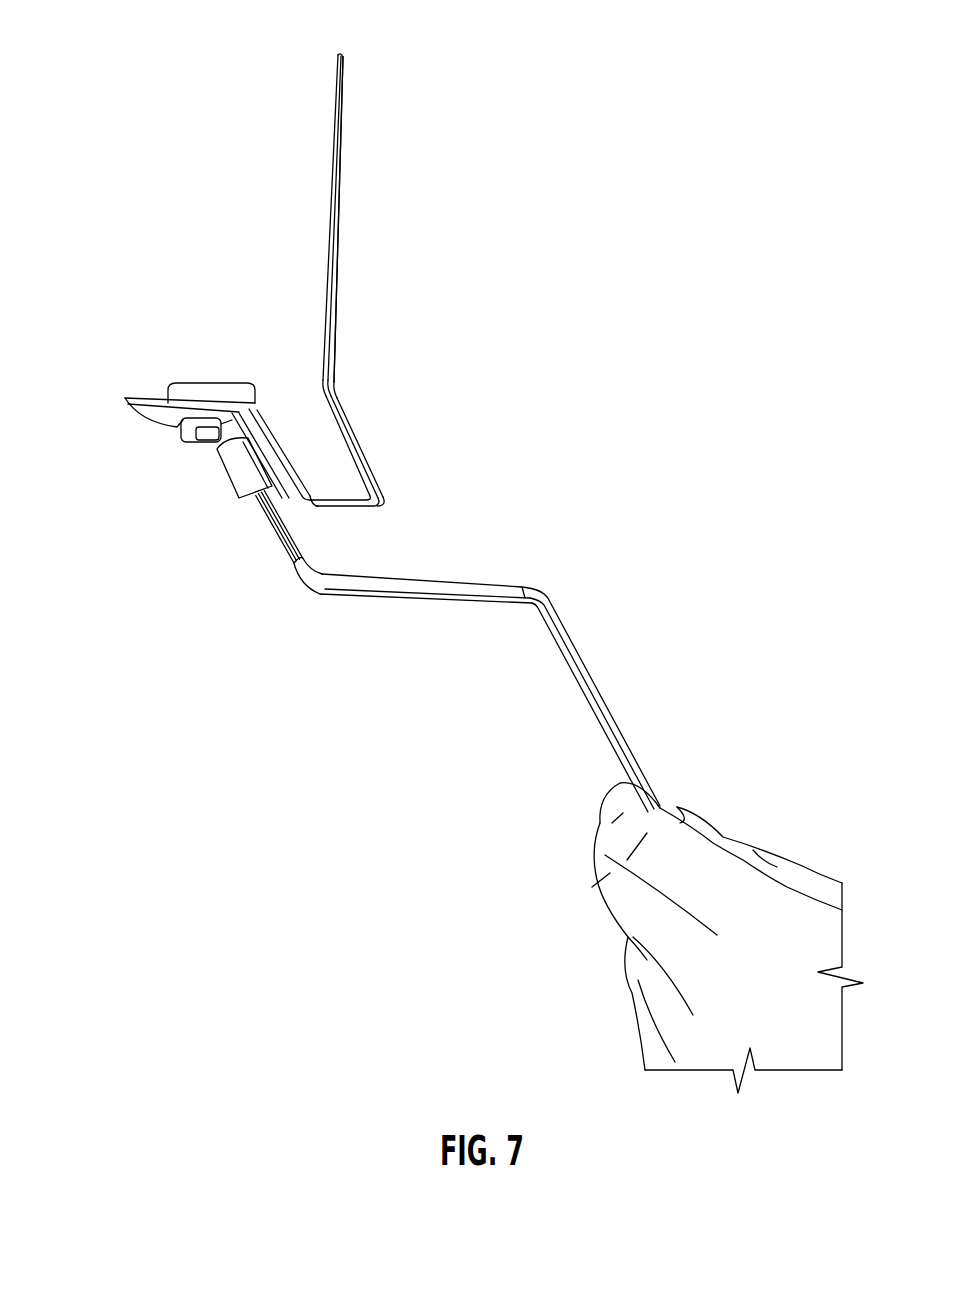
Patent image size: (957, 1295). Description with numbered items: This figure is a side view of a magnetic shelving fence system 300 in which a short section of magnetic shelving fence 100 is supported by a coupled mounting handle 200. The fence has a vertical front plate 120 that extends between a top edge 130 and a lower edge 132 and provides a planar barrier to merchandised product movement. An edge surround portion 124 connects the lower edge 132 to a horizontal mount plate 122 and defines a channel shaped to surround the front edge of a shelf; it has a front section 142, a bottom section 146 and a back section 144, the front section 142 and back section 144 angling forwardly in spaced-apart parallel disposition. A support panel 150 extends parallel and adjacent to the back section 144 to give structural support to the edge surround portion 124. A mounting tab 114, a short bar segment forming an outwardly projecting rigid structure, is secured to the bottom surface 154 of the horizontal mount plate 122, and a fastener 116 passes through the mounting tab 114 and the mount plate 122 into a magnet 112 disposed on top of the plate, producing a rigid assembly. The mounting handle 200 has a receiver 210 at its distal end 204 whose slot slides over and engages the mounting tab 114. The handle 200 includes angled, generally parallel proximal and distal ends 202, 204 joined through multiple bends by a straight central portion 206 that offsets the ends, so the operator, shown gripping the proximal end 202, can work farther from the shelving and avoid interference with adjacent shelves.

The magnetic shelving fence system 300 is at (150, 53).
The magnetic shelving fence 100 is at (341, 275).
The vertical front plate 120 is at (330, 175).
The top edge 130 is at (342, 56).
The lower edge 132 is at (335, 367).
The edge surround portion 124 is at (343, 413).
The front section 142 is at (362, 445).
The bottom section 146 is at (377, 480).
The support panel 150 is at (304, 487).
The back section 144 is at (277, 437).
The horizontal mount plate 122 is at (125, 398).
The bottom surface 154 is at (157, 408).
The magnet 112 is at (213, 382).
The fastener 116 is at (202, 452).
The mounting handle 200 is at (548, 608).
The receiver 210 is at (230, 475).
The mounting tab 114 is at (257, 517).
The distal end 204 is at (277, 547).
The straight central portion 206 is at (455, 585).
The proximal end 202 is at (615, 712).